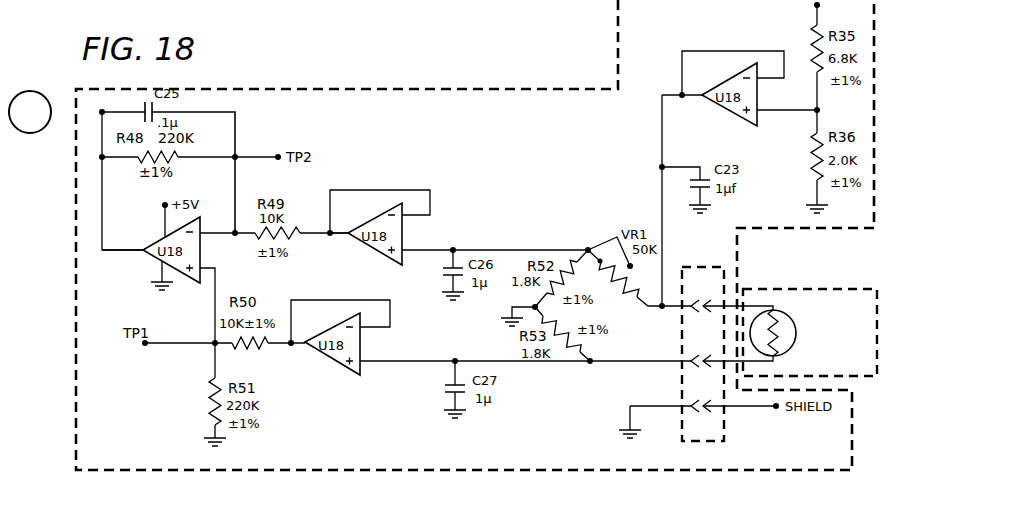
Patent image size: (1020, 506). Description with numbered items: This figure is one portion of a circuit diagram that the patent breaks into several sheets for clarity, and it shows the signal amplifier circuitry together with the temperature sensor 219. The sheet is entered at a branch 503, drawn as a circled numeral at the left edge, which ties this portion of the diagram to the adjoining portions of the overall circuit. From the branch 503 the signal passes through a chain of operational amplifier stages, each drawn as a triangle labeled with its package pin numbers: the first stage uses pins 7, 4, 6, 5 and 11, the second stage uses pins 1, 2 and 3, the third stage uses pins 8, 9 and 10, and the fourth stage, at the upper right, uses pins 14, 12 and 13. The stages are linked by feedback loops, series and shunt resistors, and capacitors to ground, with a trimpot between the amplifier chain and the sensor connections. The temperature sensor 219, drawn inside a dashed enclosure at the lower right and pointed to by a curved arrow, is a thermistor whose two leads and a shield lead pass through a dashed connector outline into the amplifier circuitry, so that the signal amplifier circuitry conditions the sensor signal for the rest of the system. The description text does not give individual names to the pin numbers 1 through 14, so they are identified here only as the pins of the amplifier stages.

The branch 503 is at (102, 112).
The temperature sensor 219 is at (882, 295).
The op-amp U18 pin 1 output 1 is at (339, 224).
The op-amp U18 pin 2 inverting input 2 is at (380, 211).
The op-amp U18 pin 3 non-inverting input 3 is at (495, 242).
The op-amp U18 pin 4 supply 4 is at (159, 219).
The op-amp U18 pin 5 non-inverting input 5 is at (207, 299).
The op-amp U18 pin 6 inverting input 6 is at (227, 225).
The op-amp U18 pin 7 output 7 is at (122, 242).
The op-amp U18 pin 8 output 8 is at (286, 336).
The op-amp U18 pin 9 inverting input 9 is at (340, 321).
The op-amp U18 pin 10 non-inverting input 10 is at (525, 353).
The op-amp U18 pin 11 ground 11 is at (158, 275).
The op-amp U18 pin 12 inverting input 12 is at (733, 73).
The op-amp U18 pin 13 non-inverting input 13 is at (787, 102).
The op-amp U18 pin 14 output 14 is at (682, 89).